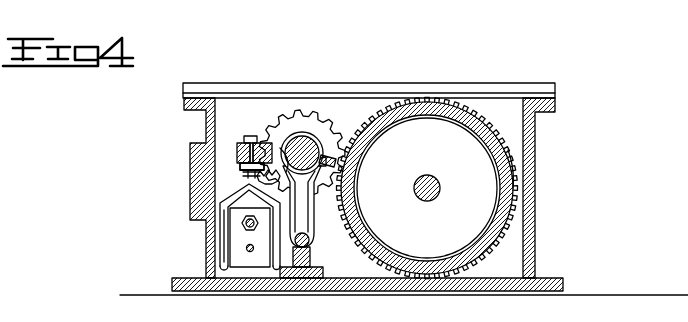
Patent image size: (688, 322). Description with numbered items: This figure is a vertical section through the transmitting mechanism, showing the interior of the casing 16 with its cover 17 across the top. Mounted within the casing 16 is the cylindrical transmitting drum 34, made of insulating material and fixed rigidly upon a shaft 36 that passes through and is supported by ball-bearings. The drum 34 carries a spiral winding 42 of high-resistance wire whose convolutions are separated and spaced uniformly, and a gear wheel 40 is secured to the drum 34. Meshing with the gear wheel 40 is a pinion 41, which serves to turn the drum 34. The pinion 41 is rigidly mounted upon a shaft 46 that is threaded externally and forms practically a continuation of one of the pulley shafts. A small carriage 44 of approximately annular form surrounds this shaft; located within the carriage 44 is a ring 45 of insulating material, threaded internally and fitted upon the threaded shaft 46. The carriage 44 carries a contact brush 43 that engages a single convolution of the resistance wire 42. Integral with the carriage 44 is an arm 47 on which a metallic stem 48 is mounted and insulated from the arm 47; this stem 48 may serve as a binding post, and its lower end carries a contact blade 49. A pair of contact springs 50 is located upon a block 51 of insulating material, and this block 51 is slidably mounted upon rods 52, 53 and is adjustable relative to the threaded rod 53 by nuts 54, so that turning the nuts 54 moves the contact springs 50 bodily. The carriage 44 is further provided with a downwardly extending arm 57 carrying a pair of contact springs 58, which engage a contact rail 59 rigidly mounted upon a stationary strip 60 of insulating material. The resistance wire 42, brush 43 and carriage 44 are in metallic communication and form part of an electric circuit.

The casing 16 is at (537, 139).
The cover 17 is at (483, 89).
The transmitting drum 34 is at (454, 188).
The shaft 36 is at (432, 181).
The gear wheel 40 is at (513, 149).
The pinion 41 is at (318, 122).
The spiral winding of resistance-wire 42 is at (516, 190).
The contact brush 43 is at (332, 156).
The carriage 44 is at (283, 124).
The ring of insulating material 45 is at (280, 147).
The shaft 46 is at (301, 136).
The arm 47 is at (238, 150).
The metallic stem 48 is at (250, 140).
The contact blade 49 is at (250, 227).
The contact springs 50 is at (252, 180).
The block of insulating material 51 is at (258, 262).
The rod 52 is at (226, 259).
The rod 53 is at (246, 249).
The nuts 54 is at (243, 226).
The downwardly extending arm 57 is at (300, 208).
The contact springs 58 is at (309, 240).
The contact rail 59 is at (308, 252).
The stationary strip of insulating material 60 is at (302, 279).